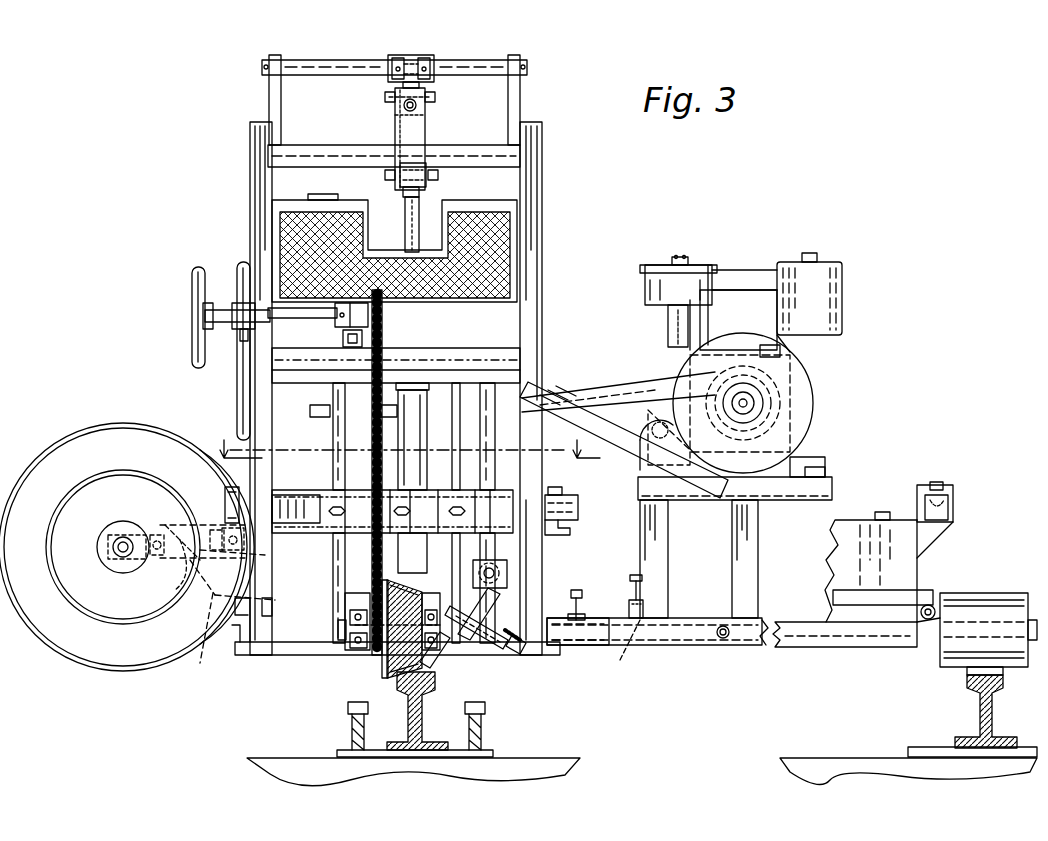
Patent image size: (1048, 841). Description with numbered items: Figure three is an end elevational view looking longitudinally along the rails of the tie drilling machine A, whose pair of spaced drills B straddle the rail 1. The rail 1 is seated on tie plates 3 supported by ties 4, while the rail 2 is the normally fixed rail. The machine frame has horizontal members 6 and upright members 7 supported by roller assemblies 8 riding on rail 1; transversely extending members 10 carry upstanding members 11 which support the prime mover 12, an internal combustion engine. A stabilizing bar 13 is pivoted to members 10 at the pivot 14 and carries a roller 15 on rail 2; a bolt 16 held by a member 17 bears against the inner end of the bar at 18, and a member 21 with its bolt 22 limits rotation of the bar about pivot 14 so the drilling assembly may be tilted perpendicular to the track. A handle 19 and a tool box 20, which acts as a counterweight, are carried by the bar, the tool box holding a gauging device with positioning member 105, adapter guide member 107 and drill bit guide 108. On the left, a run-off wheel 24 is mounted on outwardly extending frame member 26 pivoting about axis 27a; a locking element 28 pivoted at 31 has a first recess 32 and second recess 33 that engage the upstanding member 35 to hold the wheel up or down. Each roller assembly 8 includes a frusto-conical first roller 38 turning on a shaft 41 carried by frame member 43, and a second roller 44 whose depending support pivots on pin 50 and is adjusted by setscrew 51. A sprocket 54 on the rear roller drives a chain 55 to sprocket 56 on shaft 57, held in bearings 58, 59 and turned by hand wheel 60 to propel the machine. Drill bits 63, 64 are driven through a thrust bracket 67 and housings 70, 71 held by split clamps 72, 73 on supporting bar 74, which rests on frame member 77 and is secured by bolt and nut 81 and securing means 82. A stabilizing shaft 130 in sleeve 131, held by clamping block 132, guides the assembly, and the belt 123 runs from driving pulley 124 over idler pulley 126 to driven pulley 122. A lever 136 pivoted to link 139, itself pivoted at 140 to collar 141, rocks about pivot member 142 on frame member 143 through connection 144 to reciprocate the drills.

The rail 1 is at (420, 722).
The rail 2 is at (978, 710).
The tie plates 3 is at (506, 751).
The ties 4 is at (820, 760).
The horizontal frame members 6 is at (234, 632).
The upright frame members 7 is at (250, 226).
The roller assemblies 8 is at (389, 694).
The transversely extending members 10 is at (693, 648).
The upstanding members 11 is at (660, 550).
The prime mover 12 is at (812, 412).
The stabilizing bar 13 is at (780, 648).
The pivot 14 is at (724, 640).
The roller 15 is at (994, 593).
The bolt 16 is at (632, 576).
The member 17 is at (629, 600).
The inner end of stabilizing bar 18 is at (625, 651).
The handle 19 is at (924, 620).
The tool box 20 is at (853, 520).
The transversely extending member 21 is at (580, 616).
The bolt 22 is at (571, 592).
The run-off wheel 24 is at (70, 445).
The frame member 26 is at (108, 547).
The axle 27a is at (265, 555).
The locking element 28 is at (196, 620).
The pivot 31 is at (153, 535).
The first recess 32 is at (259, 592).
The second recess 33 is at (178, 578).
The upstanding member 35 is at (265, 618).
The first roller 38 is at (350, 660).
The shaft 41 is at (340, 636).
The frame member 43 is at (462, 586).
The second roller 44 is at (452, 670).
The pivot pin 50 is at (500, 572).
The adjusting setscrew 51 is at (518, 655).
The sprocket 54 is at (384, 672).
The chain 55 is at (372, 432).
The sprocket 56 is at (370, 317).
The shaft 57 is at (296, 318).
The bearing 58 is at (365, 290).
The bearing 59 is at (240, 300).
The hand wheel 60 is at (192, 286).
The drill bit 63 is at (348, 712).
The drill bit 64 is at (483, 726).
The thrust bracket 67 is at (342, 200).
The housing 70 is at (330, 392).
The housing 71 is at (490, 450).
The split clamp 72 is at (318, 495).
The split clamp 73 is at (505, 490).
The supporting bar 74 is at (578, 506).
The frame member 77 is at (572, 530).
The bolt and nut 81 is at (560, 492).
The securing means 82 is at (240, 487).
The positioning member 105 is at (948, 512).
The adapter guide member 107 is at (953, 492).
The drill bit guide 108 is at (938, 482).
The driven pulley 122 is at (310, 411).
The belt 123 is at (598, 390).
The driving pulley 124 is at (790, 386).
The idler pulley 126 is at (645, 440).
The stabilizing shaft 130 is at (422, 222).
The sleeve 131 is at (410, 383).
The clamping block 132 is at (432, 490).
The lever 136 is at (395, 102).
The link 139 is at (395, 129).
The pivot 140 is at (387, 176).
The collar 141 is at (418, 165).
The pivot member 142 is at (410, 54).
The frame member 143 is at (474, 62).
The connection 144 is at (418, 106).
The tie drilling machine A is at (557, 206).
The drills B is at (332, 744).